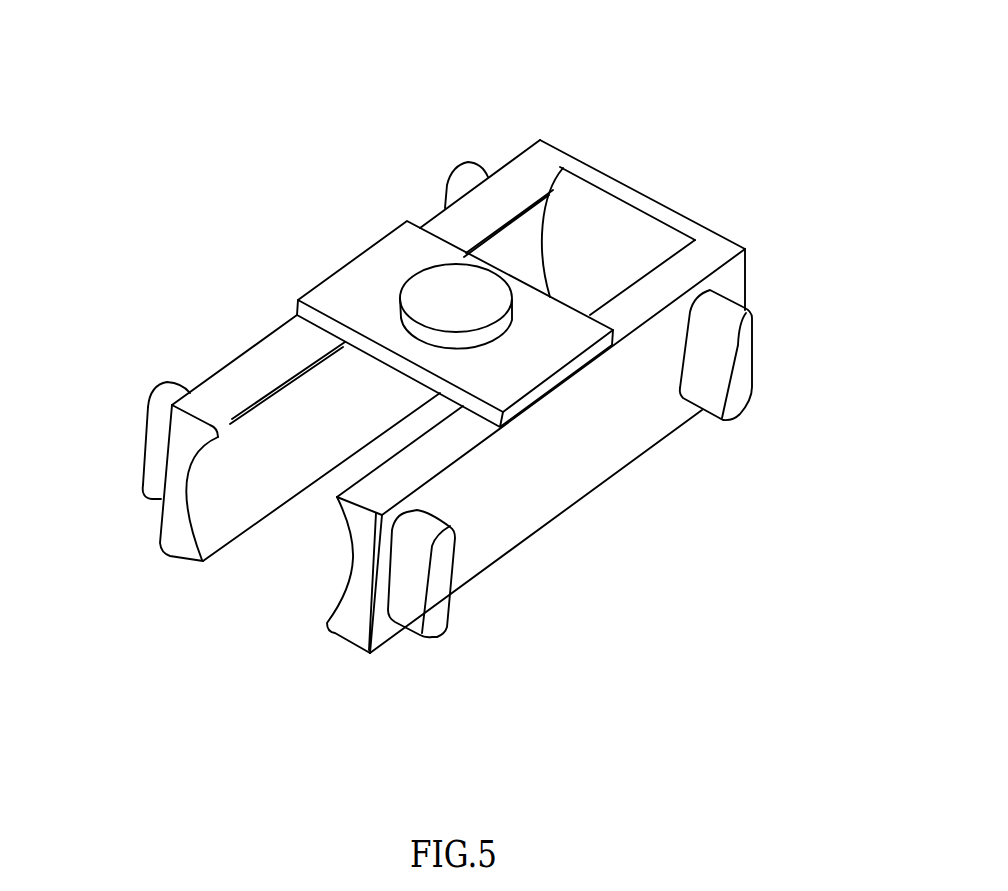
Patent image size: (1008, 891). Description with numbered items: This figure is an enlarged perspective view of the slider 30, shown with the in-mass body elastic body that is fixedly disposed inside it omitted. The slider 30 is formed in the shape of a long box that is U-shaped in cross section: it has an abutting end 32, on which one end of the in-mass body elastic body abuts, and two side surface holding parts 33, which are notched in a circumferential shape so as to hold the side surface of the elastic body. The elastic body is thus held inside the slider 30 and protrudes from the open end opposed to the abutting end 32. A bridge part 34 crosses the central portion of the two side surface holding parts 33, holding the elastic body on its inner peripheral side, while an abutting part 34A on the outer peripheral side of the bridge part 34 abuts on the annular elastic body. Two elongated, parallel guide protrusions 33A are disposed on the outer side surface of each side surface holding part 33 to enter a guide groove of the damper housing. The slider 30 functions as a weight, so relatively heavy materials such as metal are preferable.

The slider 30 is at (521, 349).
The abutting end 32 is at (615, 227).
The side surface holding part 33 is at (520, 177).
The guide protrusion 33A is at (470, 177).
The bridge part 34 is at (363, 287).
The abutting part 34A is at (432, 283).